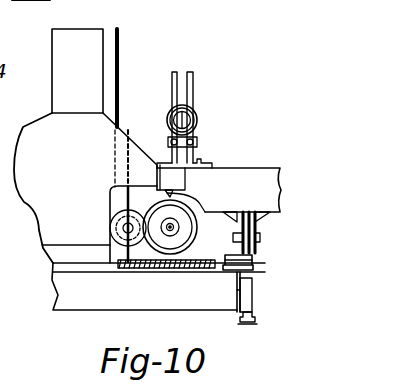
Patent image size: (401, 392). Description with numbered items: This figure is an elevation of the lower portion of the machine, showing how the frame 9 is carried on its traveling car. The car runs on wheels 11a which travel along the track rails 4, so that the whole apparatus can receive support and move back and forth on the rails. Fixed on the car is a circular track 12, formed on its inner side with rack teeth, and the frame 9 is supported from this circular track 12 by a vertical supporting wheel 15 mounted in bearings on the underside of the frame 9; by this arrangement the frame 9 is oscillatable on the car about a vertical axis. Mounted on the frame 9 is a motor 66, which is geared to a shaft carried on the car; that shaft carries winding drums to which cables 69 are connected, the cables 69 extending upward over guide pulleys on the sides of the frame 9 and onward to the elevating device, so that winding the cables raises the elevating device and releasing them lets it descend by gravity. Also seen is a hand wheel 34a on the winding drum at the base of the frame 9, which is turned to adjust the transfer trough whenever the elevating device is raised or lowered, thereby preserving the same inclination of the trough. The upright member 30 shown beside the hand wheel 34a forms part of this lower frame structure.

The cable 69 is at (118, 62).
The fork 30 is at (192, 88).
The hand wheel 34a is at (194, 118).
The frame 9 is at (235, 185).
The vertical supporting wheel 15 is at (259, 237).
The circular track 12 is at (253, 261).
The wheels 11a is at (253, 287).
The track rails 4 is at (256, 322).
The motor 66 is at (181, 262).